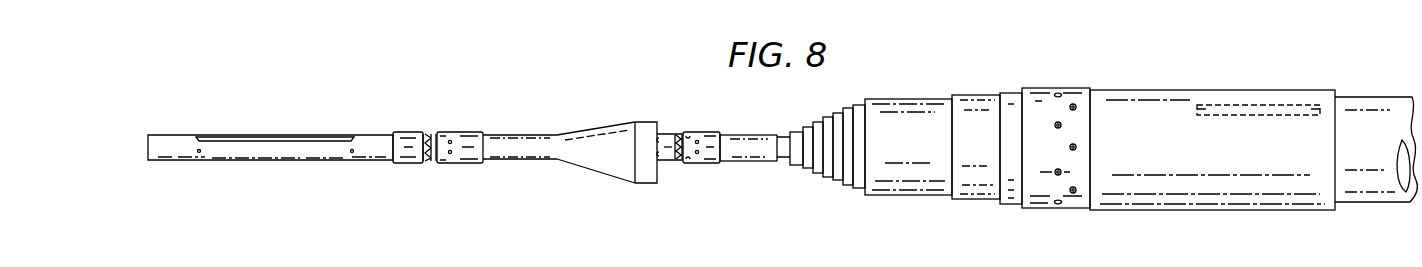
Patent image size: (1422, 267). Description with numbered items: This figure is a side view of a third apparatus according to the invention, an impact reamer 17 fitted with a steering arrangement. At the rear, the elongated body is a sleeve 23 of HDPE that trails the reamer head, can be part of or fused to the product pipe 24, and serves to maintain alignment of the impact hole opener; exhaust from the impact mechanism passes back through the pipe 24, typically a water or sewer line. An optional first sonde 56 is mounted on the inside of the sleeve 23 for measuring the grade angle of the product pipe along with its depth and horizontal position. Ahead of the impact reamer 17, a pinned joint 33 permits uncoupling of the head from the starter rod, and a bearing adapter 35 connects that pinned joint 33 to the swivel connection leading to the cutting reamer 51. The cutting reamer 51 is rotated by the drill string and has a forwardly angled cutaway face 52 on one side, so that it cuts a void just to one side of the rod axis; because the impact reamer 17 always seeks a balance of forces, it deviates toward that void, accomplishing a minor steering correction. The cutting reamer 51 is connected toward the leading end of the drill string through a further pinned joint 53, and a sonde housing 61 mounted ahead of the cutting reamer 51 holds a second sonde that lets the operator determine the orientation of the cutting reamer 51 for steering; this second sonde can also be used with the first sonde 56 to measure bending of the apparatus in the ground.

The impact reamer 17 is at (1039, 65).
The sleeve 23 is at (1135, 98).
The pipe 24 is at (1373, 106).
The pinned joint 33 is at (700, 132).
The bearing adapter 35 is at (663, 161).
The cutting reamer 51 is at (603, 165).
The forwardly angled cutaway face 52 is at (598, 128).
The pinned joint 53 is at (433, 132).
The sonde 56 is at (1259, 104).
The sonde housing 61 is at (267, 134).